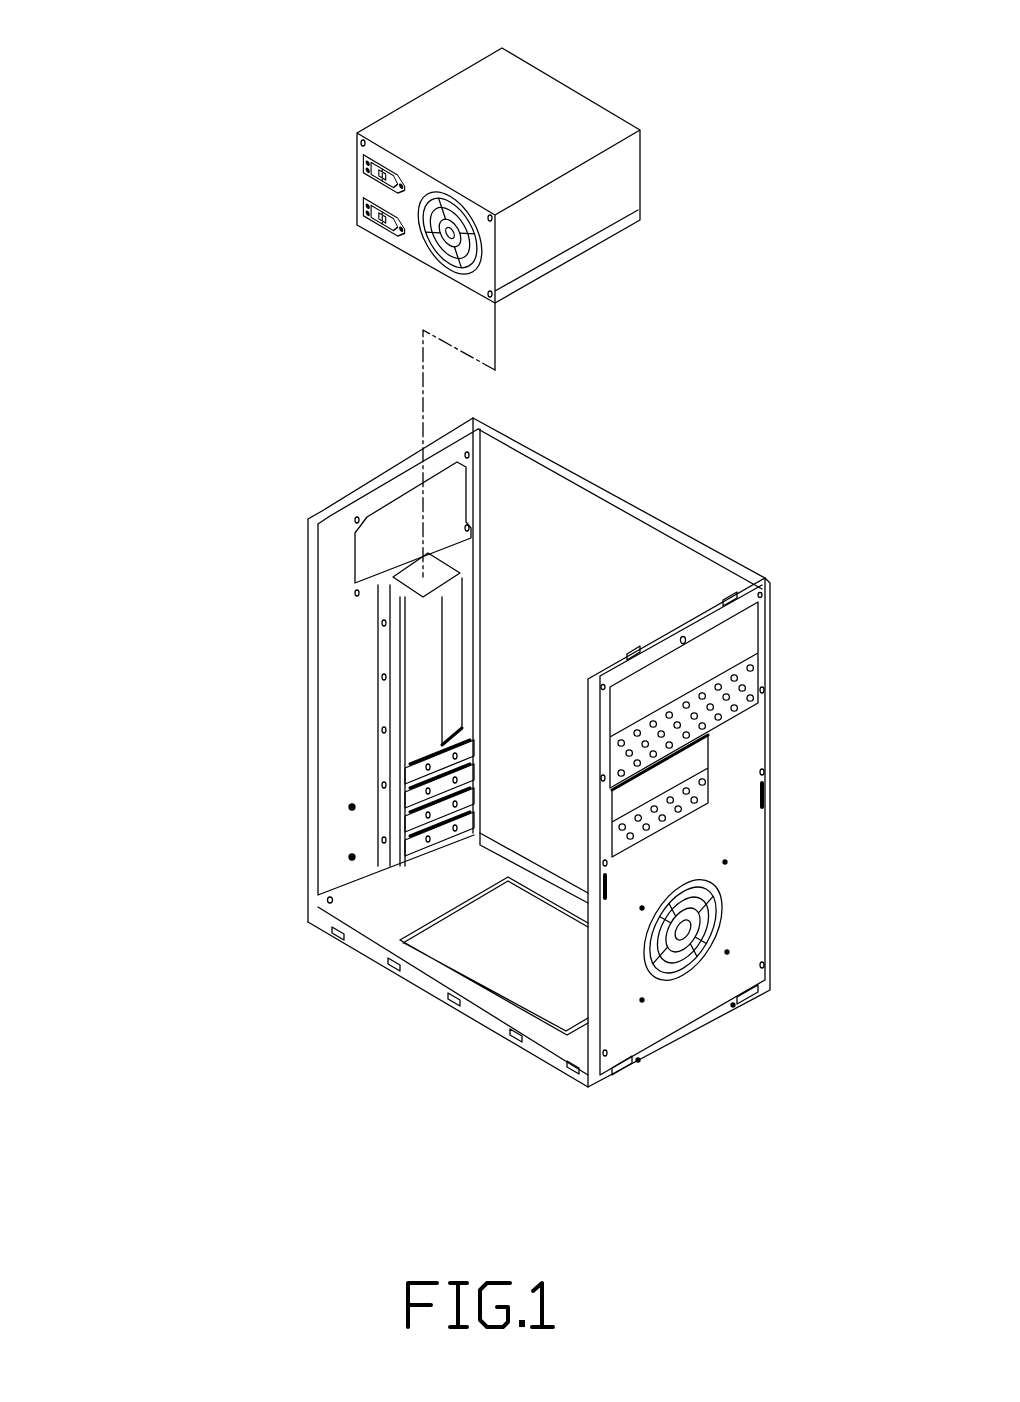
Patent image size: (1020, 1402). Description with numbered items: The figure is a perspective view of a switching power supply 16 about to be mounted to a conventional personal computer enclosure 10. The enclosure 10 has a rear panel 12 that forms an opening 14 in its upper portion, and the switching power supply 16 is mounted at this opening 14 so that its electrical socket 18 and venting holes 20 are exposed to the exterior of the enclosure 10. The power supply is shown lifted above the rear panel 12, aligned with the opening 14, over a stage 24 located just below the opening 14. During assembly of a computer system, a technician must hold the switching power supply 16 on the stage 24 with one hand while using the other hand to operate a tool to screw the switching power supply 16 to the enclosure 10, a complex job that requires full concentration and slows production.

The personal computer enclosure 10 is at (235, 888).
The rear panel 12 is at (345, 702).
The opening 14 is at (408, 510).
The switching power supply 16 is at (543, 103).
The electrical socket 18 is at (370, 182).
The venting holes 20 is at (437, 255).
The stage 24 is at (437, 577).